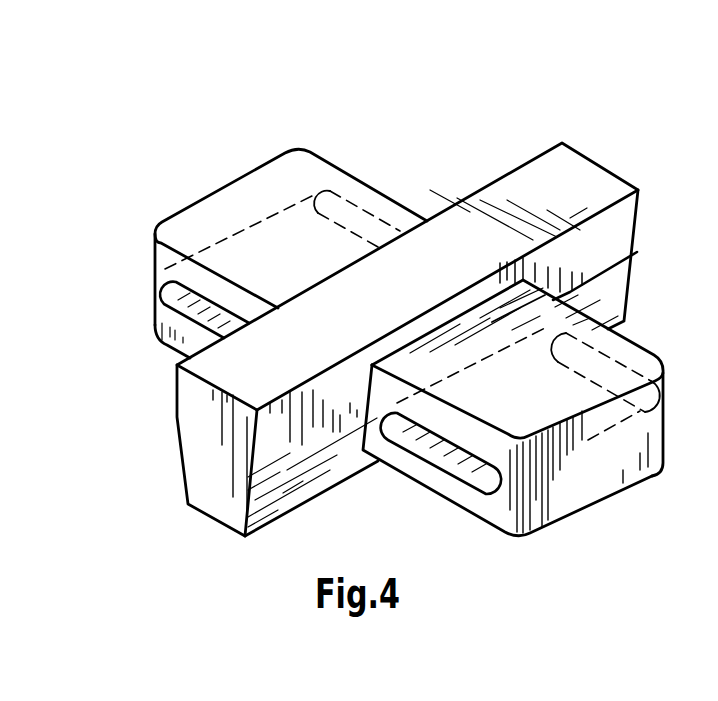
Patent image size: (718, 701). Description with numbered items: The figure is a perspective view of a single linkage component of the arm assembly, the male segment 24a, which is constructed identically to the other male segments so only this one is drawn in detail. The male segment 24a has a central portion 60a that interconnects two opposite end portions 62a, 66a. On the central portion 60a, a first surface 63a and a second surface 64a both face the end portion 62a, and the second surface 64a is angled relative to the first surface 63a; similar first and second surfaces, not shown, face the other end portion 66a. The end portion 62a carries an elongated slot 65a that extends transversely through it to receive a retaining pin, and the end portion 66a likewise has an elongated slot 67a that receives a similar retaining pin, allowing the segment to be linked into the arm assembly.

The male segment 24a is at (439, 132).
The central portion 60a is at (578, 175).
The end portion 62a is at (628, 348).
The first surface 63a is at (608, 233).
The second surface 64a is at (608, 295).
The elongated slot 65a is at (460, 460).
The end portion 66a is at (292, 172).
The elongated slot 67a is at (188, 302).